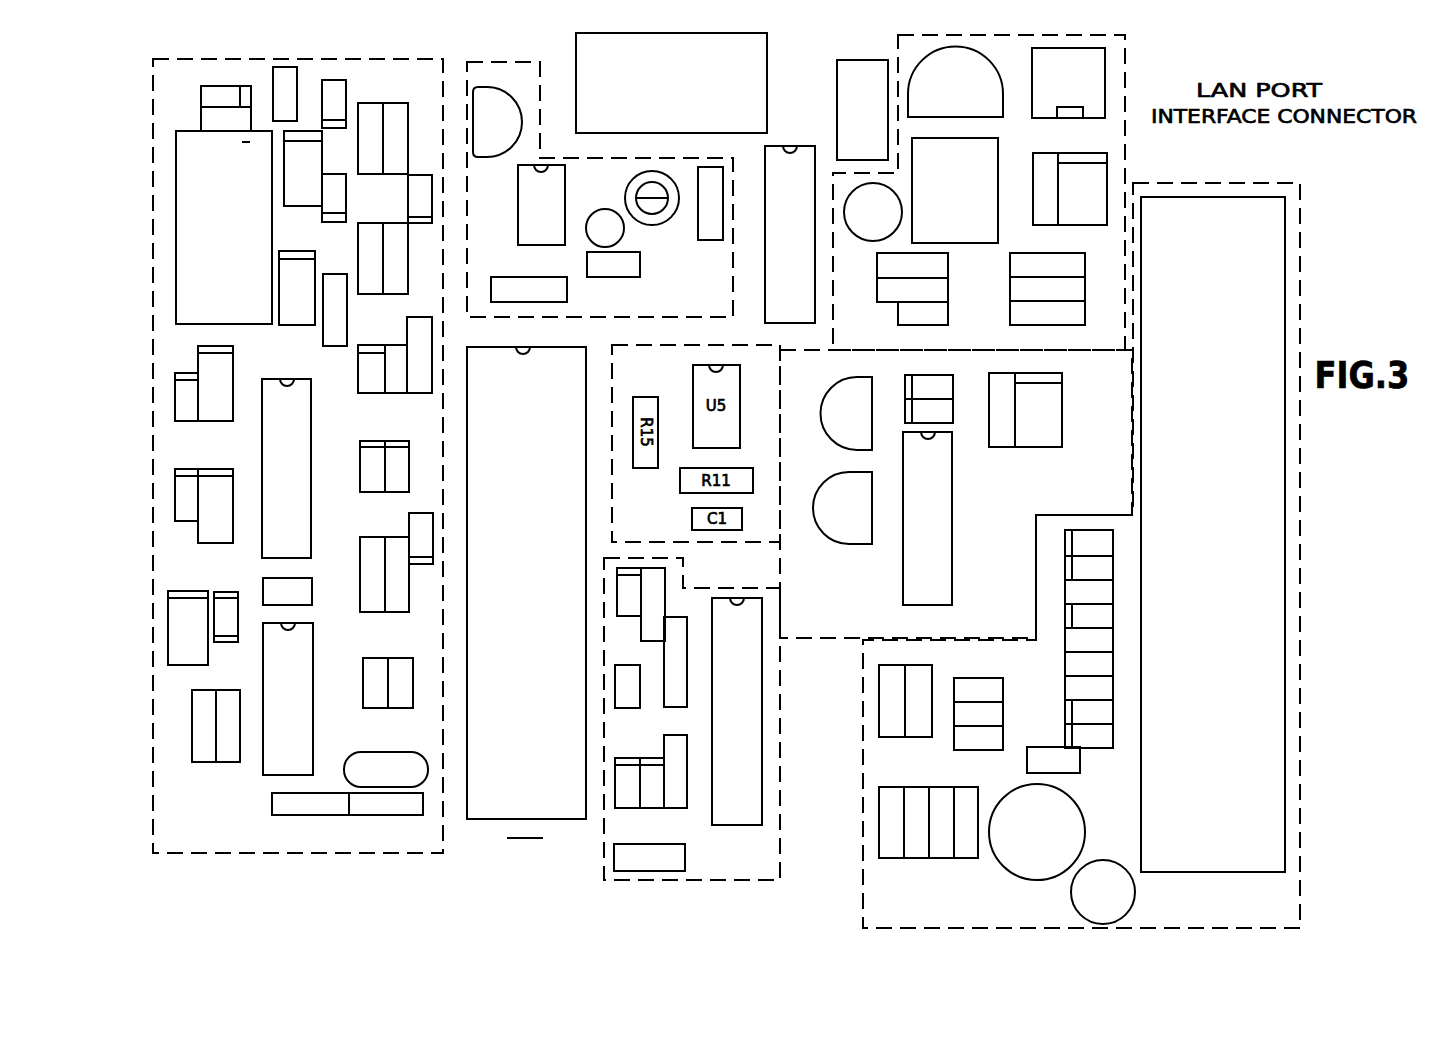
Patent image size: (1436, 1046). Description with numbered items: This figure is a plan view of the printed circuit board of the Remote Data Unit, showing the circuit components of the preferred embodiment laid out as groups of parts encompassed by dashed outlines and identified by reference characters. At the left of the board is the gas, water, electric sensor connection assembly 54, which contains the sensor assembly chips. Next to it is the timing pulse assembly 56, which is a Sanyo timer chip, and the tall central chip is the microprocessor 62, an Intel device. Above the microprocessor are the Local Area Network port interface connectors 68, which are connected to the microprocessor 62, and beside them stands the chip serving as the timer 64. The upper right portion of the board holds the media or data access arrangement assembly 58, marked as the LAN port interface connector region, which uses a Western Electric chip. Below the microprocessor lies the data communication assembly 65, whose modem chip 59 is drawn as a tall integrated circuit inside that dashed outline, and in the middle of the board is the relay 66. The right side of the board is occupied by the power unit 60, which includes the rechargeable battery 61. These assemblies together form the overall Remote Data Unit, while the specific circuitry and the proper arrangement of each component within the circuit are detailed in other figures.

The gas, water, electric sensor connection assembly 54 is at (330, 44).
The timing pulse assembly 56 is at (512, 53).
The data access arrangement assembly 58 is at (1125, 105).
The integrated circuit U4 59 is at (762, 622).
The power unit 60 is at (1101, 542).
The battery 61 is at (1286, 568).
The microprocessor 62 is at (467, 621).
The timer 64 is at (778, 152).
The data communication assembly 65 is at (712, 719).
The relay 66 is at (952, 538).
The Local Area Network port interface connectors 68 is at (838, 62).